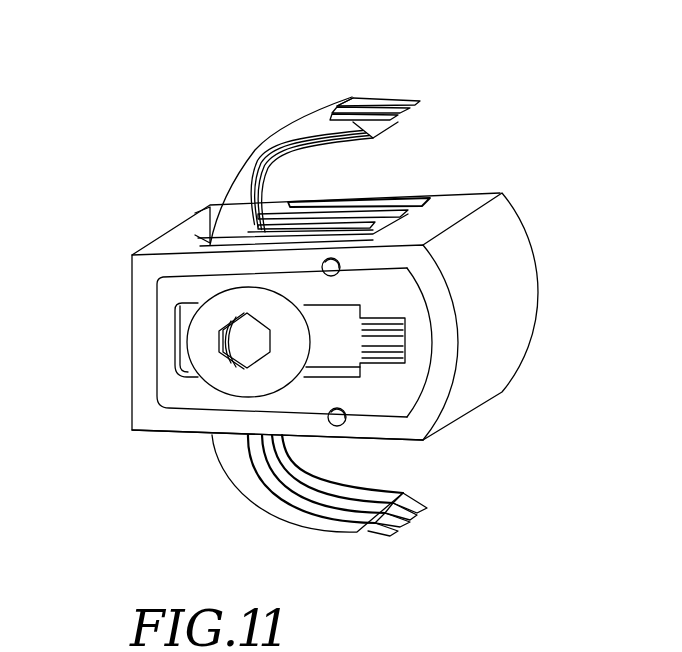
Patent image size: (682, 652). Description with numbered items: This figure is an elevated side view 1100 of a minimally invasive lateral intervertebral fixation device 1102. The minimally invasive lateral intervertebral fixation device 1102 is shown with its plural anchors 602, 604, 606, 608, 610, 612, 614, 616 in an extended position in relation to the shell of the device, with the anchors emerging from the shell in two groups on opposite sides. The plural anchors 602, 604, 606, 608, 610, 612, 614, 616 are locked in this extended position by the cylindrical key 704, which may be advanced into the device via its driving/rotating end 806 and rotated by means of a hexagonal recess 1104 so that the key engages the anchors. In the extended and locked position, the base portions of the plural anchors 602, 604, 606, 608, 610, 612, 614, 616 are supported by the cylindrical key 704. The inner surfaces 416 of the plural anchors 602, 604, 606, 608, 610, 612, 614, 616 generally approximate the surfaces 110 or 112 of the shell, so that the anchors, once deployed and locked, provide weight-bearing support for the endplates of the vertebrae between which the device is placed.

The surface 110 is at (183, 227).
The surface 112 is at (420, 443).
The inner surfaces 416 is at (390, 191).
The anchor 602 is at (383, 530).
The anchor 604 is at (402, 528).
The anchor 606 is at (413, 520).
The anchor 608 is at (424, 510).
The anchor 610 is at (367, 107).
The anchor 612 is at (373, 117).
The anchor 614 is at (423, 110).
The anchor 616 is at (407, 98).
The cylindrical key 704 is at (333, 329).
The driving/rotating end 806 is at (203, 345).
The elevated side view 1100 is at (568, 80).
The minimally invasive lateral intervertebral fixation device 1102 is at (500, 193).
The hexagonal recess 1104 is at (232, 356).